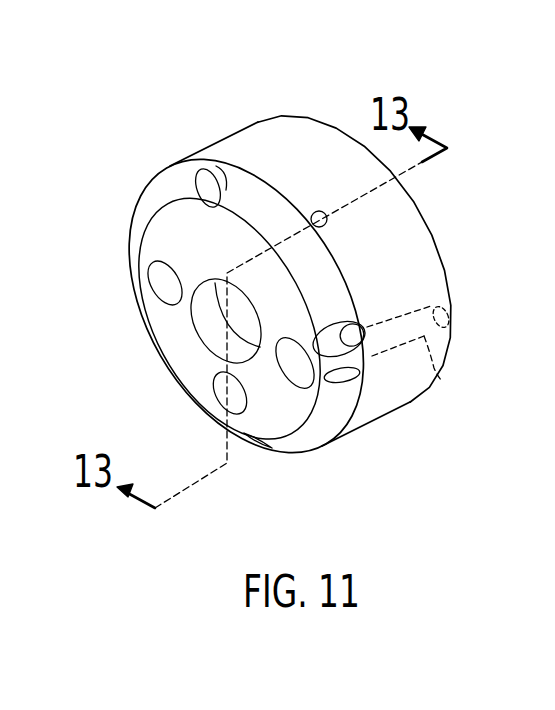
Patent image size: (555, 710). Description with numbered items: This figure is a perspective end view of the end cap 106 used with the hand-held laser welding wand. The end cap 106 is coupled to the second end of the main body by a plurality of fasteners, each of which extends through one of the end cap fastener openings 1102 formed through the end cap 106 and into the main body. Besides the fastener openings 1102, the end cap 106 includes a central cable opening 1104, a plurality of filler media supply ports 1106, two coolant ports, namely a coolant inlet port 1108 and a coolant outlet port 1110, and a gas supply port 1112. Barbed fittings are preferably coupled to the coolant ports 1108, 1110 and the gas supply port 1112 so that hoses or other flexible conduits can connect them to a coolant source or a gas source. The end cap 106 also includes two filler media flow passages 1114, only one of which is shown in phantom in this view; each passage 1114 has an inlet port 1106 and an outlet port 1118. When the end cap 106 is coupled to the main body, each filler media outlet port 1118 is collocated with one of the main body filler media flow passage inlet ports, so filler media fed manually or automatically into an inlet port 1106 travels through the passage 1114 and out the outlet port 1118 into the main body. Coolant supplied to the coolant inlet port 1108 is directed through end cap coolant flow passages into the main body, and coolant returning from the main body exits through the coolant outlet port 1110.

The end cap 106 is at (149, 124).
The end cap fastener openings 1102 is at (216, 170).
The cable opening 1104 is at (222, 297).
The filler media supply port 1106 is at (337, 378).
The coolant inlet port 1108 is at (162, 277).
The coolant outlet port 1110 is at (300, 377).
The gas supply port 1112 is at (217, 385).
The filler media flow passage 1114 is at (439, 378).
The filler media outlet port 1118 is at (450, 303).